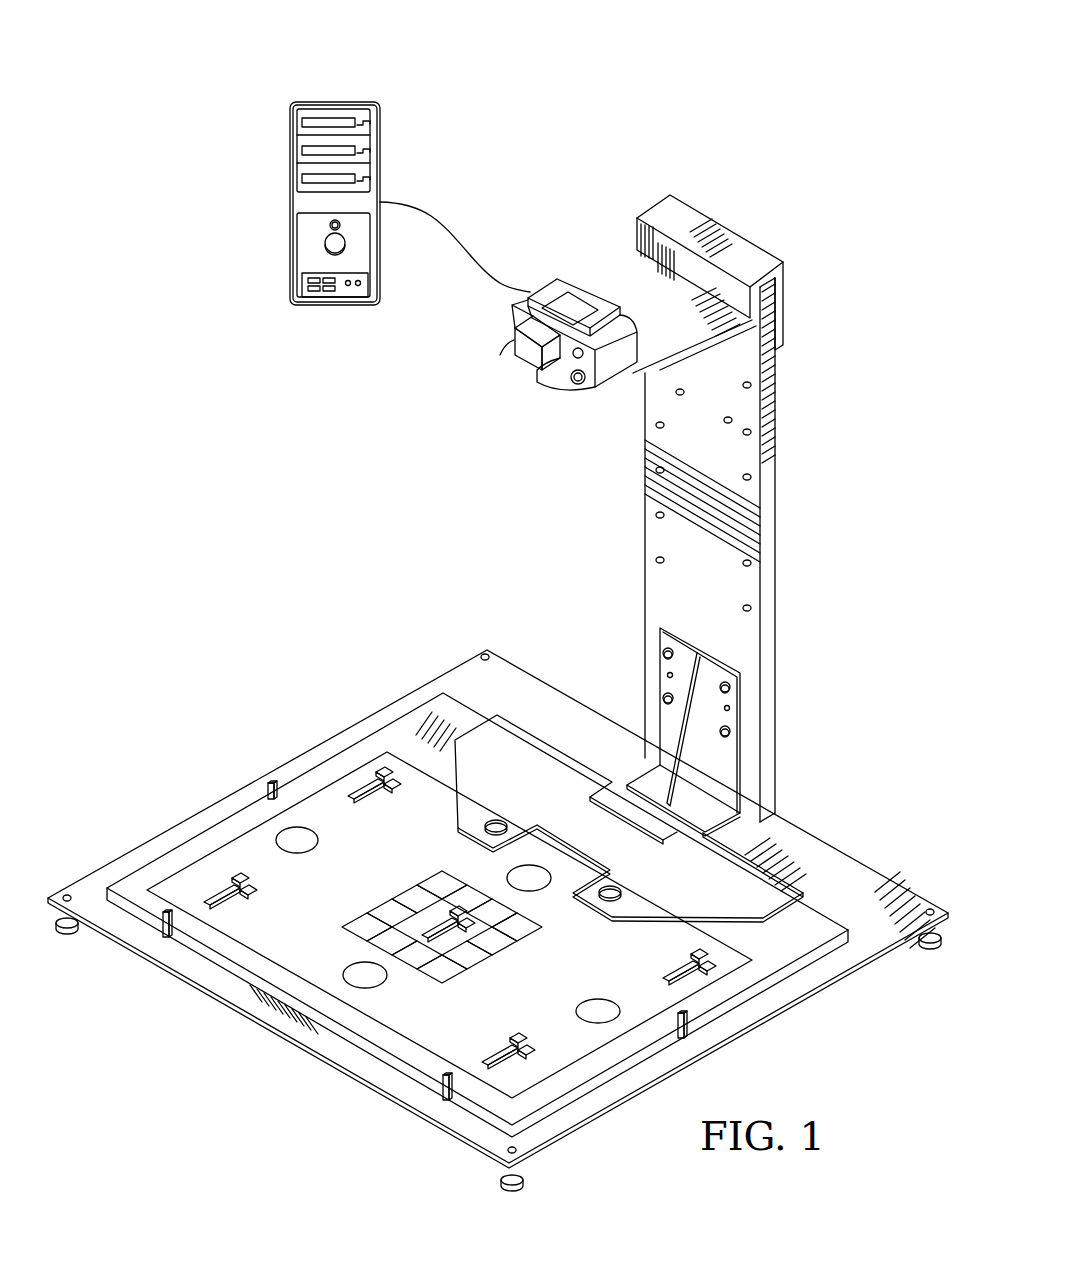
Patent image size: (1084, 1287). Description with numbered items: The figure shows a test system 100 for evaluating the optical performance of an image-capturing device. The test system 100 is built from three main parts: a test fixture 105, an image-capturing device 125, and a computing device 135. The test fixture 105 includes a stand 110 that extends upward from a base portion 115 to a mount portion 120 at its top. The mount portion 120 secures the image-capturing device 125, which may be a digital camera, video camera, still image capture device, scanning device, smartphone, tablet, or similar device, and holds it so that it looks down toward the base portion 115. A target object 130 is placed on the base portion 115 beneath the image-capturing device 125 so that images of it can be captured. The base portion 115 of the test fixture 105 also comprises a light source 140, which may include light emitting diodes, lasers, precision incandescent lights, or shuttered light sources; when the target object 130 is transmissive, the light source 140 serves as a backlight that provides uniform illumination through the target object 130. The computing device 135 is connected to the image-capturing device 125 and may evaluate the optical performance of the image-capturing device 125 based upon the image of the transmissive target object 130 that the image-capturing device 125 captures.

The test system 100 is at (714, 110).
The test fixture 105 is at (345, 1108).
The stand 110 is at (777, 522).
The base portion 115 is at (245, 1020).
The mount portion 120 is at (613, 275).
The image-capturing device 125 is at (518, 343).
The target object 130 is at (247, 853).
The computing device 135 is at (333, 102).
The light source 140 is at (730, 982).